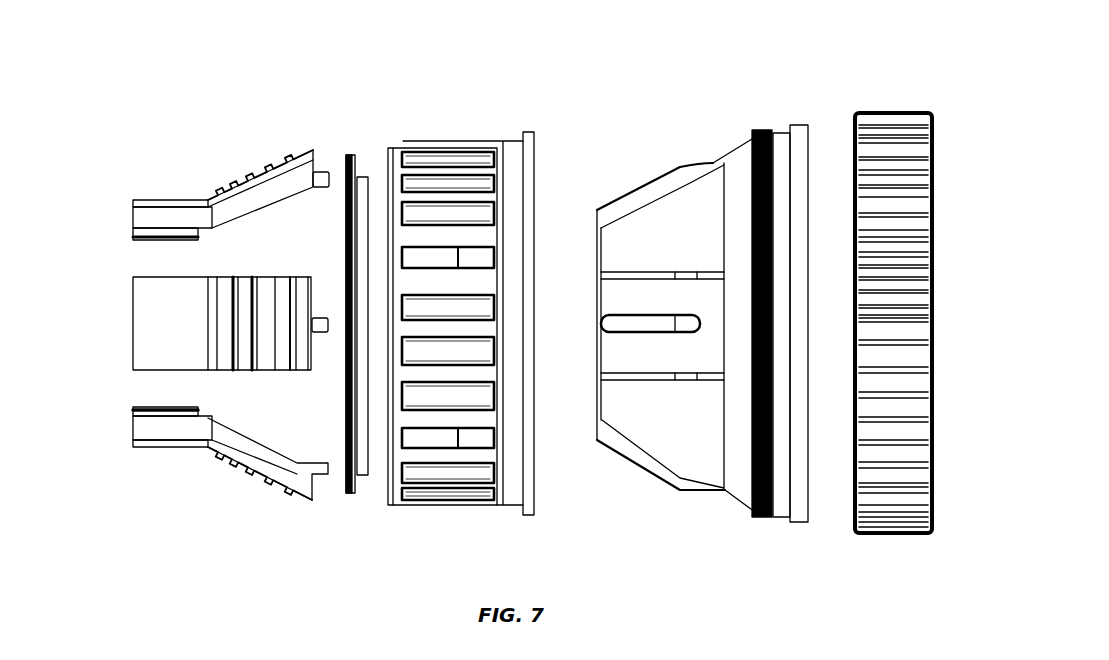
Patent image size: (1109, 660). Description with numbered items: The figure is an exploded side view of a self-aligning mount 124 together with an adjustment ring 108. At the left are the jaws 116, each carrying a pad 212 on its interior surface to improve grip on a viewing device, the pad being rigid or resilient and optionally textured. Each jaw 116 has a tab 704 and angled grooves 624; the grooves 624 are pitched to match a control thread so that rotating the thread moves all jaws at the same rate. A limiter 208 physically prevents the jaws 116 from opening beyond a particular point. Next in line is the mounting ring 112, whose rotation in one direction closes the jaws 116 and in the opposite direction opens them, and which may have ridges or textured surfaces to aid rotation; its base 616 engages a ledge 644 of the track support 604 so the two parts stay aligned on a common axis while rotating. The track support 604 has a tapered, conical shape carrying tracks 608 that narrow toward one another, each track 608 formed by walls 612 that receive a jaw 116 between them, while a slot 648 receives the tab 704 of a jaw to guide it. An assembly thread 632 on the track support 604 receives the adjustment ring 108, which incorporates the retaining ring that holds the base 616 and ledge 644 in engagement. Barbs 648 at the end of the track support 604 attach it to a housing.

The adjustment ring 108 is at (860, 112).
The mounting ring 112 is at (413, 505).
The jaw 116 is at (193, 278).
The self-aligning mount 124 is at (500, 84).
The limiter 208 is at (352, 495).
The pad 212 is at (133, 236).
The track support 604 is at (735, 498).
The track 608 is at (639, 262).
The wall 612 is at (647, 204).
The base 616 is at (532, 515).
The groove 624 is at (293, 278).
The assembly thread 632 is at (768, 128).
The ledge 644 is at (752, 510).
The slot 648 is at (647, 314).
The tab 704 is at (328, 172).